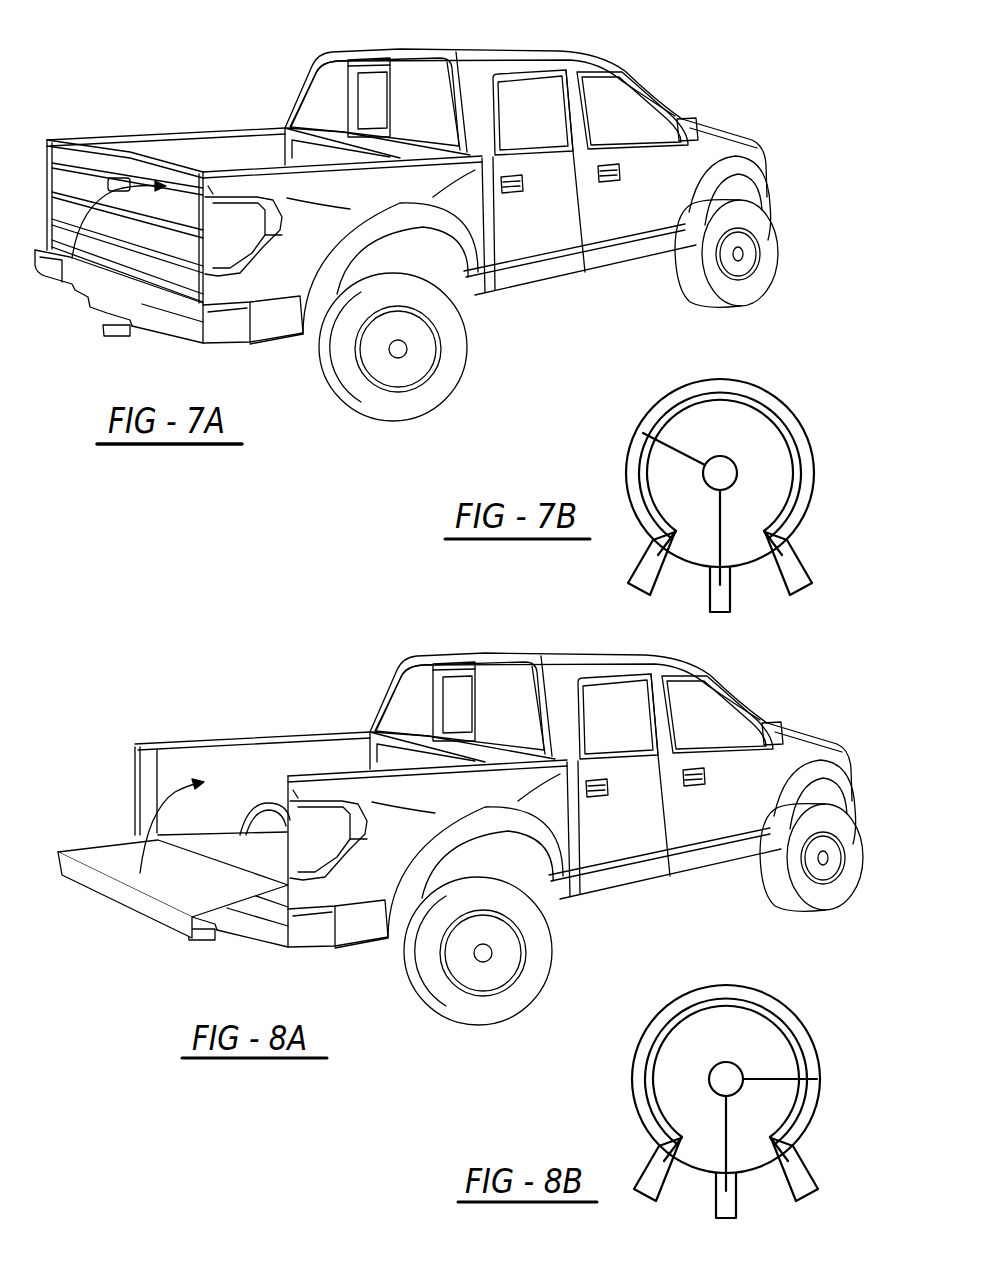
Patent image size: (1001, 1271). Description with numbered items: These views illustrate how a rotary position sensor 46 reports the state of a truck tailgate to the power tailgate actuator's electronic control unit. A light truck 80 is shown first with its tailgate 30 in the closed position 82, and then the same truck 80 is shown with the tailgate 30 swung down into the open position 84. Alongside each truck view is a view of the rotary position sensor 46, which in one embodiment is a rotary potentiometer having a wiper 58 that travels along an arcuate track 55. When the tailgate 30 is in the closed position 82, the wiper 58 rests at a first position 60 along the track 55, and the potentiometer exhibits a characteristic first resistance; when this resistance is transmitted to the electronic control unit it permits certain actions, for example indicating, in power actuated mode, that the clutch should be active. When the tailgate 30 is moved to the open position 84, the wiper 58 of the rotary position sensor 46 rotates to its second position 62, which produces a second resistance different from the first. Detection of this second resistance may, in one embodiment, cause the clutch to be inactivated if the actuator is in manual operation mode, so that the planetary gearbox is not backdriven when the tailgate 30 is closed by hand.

In FIG. 7A, the tailgate 30 is at (140, 174).
In FIG. 8A, the tailgate 30 is at (171, 852).
In FIG. 7A, the closed position 82 is at (165, 161).
In FIG. 8A, the open position 84 is at (102, 862).
In FIG. 7A, the light truck 80 is at (406, 213).
In FIG. 8A, the light truck 80 is at (458, 799).
In FIG. 7B, the rotary position sensor 46 is at (697, 461).
In FIG. 8B, the rotary position sensor 46 is at (731, 1076).
In FIG. 7B, the track 55 is at (747, 399).
In FIG. 7B, the wiper 58 is at (677, 449).
In FIG. 8B, the wiper 58 is at (776, 1066).
In FIG. 7B, the first position 60 is at (639, 428).
In FIG. 8B, the second position 62 is at (820, 1079).